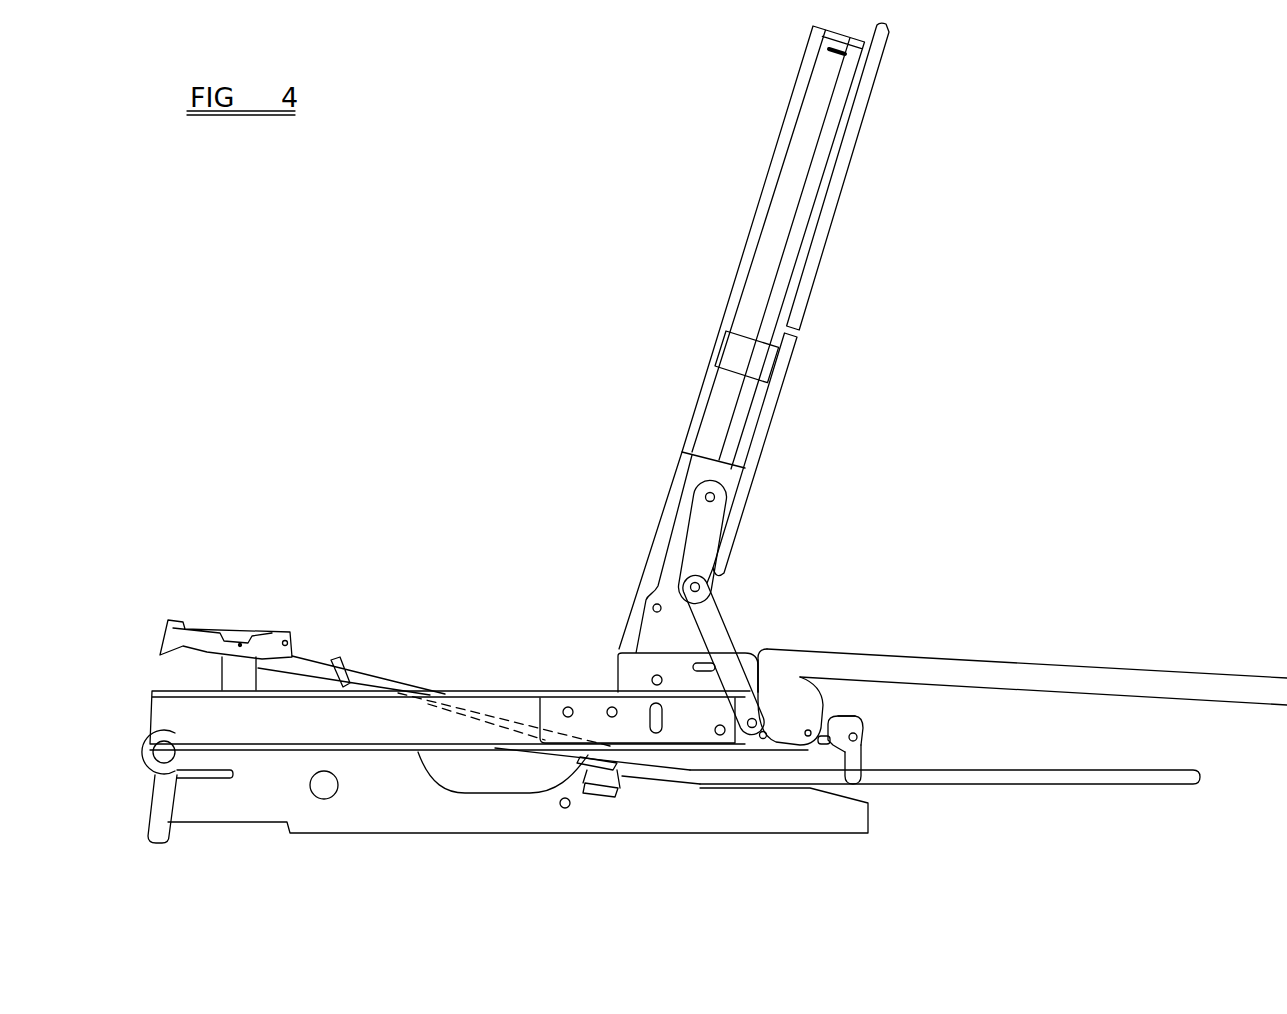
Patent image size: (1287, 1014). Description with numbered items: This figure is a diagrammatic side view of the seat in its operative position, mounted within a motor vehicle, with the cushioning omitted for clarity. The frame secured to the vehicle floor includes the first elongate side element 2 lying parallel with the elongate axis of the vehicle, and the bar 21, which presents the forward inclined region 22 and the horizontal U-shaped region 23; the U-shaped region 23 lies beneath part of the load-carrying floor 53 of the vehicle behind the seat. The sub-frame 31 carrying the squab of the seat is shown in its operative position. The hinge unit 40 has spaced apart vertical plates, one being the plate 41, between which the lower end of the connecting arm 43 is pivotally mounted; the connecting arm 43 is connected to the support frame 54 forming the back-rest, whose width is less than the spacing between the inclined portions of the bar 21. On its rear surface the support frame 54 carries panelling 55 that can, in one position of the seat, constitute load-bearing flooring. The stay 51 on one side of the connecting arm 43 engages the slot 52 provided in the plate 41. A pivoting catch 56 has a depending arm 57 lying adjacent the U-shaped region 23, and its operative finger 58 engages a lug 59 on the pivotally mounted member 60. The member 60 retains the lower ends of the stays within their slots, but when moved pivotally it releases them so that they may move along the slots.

The first elongate side element 2 is at (683, 800).
The bar 21 is at (491, 692).
The forward inclined region 22 is at (387, 655).
The U-shaped region 23 is at (1048, 778).
The sub-frame 31 is at (313, 655).
The hinge unit 40 is at (593, 601).
The vertical plate 41 is at (776, 684).
The connecting arm 43 is at (705, 534).
The stay 51 is at (722, 648).
The slot 52 is at (790, 703).
The load-carrying floor 53 is at (1135, 664).
The support frame 54 is at (706, 254).
The panelling 55 is at (813, 379).
The pivoting catch 56 is at (886, 732).
The depending arm 57 is at (862, 763).
The operative finger 58 is at (843, 720).
The lug 59 is at (832, 742).
The pivotally mounted member 60 is at (806, 735).